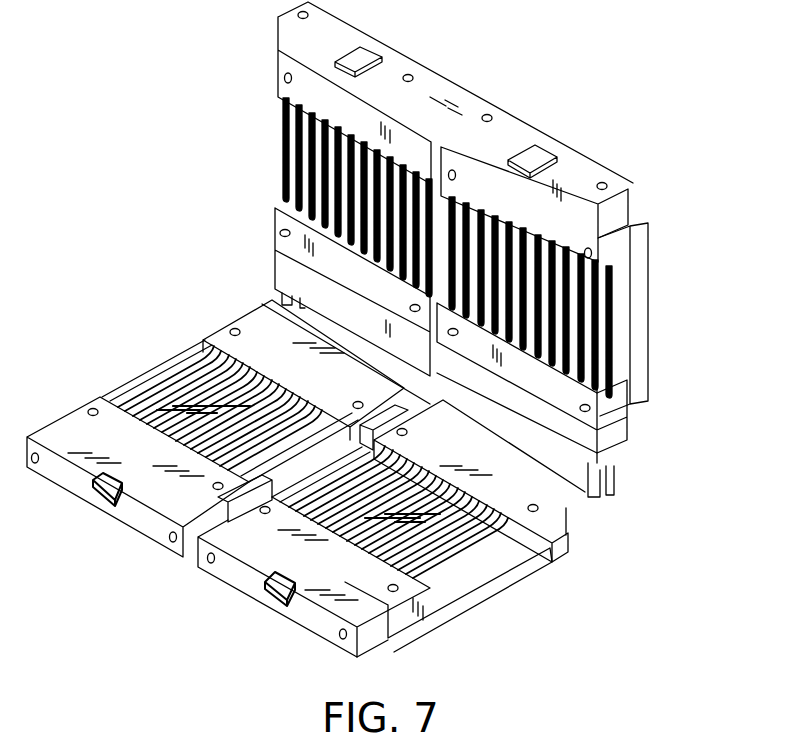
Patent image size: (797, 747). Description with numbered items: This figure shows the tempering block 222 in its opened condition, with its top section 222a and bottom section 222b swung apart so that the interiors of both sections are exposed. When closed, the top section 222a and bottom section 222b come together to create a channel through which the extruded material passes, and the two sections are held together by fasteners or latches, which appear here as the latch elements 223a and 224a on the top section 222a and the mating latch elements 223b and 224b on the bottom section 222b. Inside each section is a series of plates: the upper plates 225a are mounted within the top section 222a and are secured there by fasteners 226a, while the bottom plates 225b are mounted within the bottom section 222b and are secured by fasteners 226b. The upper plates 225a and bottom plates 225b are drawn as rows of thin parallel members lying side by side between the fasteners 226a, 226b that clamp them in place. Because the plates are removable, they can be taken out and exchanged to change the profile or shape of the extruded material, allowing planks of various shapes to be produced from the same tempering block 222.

The tempering block 222 is at (678, 305).
The top section 222a is at (647, 253).
The bottom section 222b is at (484, 600).
The fastener or latch 223a is at (364, 56).
The fastener or latch 223b is at (97, 498).
The fastener or latch 224a is at (537, 153).
The fastener or latch 224b is at (270, 598).
The upper plates 225a is at (288, 150).
The bottom plates 225b is at (150, 376).
The fasteners 226a is at (270, 230).
The fasteners 226b is at (230, 331).